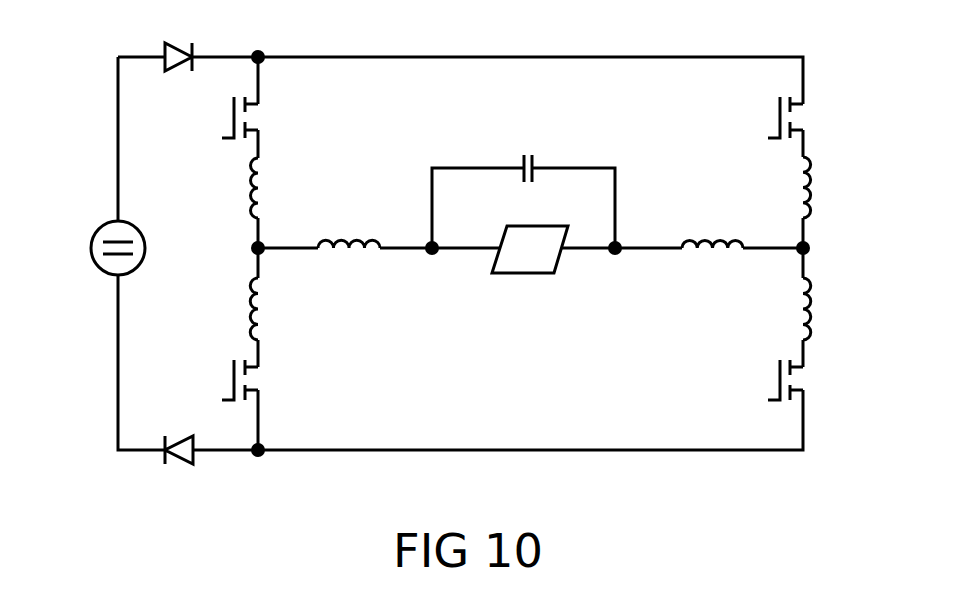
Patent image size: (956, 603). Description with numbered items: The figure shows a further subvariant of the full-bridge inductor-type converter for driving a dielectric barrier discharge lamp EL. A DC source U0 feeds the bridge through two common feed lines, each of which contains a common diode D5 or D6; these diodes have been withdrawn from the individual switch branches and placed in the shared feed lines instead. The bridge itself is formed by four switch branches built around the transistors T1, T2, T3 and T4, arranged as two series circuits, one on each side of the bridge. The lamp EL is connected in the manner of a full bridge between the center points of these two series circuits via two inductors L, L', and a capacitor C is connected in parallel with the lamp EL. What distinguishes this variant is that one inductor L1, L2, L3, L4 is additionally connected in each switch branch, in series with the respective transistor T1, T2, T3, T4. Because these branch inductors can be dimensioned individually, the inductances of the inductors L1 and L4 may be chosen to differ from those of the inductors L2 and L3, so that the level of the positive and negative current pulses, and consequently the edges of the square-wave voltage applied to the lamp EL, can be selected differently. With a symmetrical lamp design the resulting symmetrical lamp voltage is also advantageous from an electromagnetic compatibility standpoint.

The DC voltage source U0 is at (91, 224).
The common diode D5 is at (177, 41).
The common diode D6 is at (174, 430).
The transistor T1 is at (266, 119).
The transistor T2 is at (264, 380).
The transistor T3 is at (811, 117).
The transistor T4 is at (812, 380).
The inductor L1 is at (228, 188).
The inductor L2 is at (228, 309).
The inductor L3 is at (834, 187).
The inductor L4 is at (832, 309).
The inductor L is at (349, 221).
The inductor L' is at (712, 221).
The capacitor C is at (525, 149).
The dielectric barrier discharge lamp EL is at (530, 273).